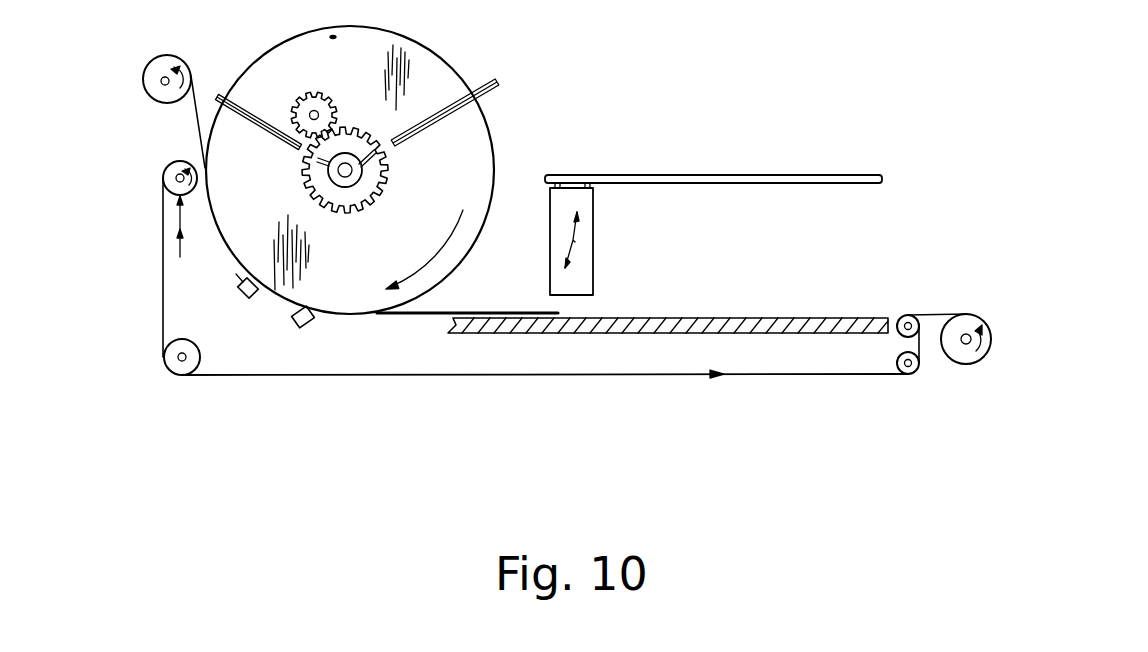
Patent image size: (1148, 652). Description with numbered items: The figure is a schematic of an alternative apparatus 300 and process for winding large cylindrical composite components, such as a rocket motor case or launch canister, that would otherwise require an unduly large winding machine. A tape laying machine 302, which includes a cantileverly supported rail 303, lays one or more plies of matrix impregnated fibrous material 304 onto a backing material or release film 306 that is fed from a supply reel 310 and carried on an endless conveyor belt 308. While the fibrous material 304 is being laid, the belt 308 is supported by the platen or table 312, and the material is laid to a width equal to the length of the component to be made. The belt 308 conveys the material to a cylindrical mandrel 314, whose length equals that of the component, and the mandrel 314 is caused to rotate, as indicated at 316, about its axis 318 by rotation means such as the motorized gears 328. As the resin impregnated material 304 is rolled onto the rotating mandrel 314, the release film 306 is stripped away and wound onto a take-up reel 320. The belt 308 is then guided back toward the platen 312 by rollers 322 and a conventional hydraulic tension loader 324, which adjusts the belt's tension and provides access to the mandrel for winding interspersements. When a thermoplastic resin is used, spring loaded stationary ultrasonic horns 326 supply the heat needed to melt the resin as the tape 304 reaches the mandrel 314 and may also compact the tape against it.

The apparatus 300 is at (477, 398).
The tape laying machine 302 is at (550, 205).
The cantileverly supported rail 303 is at (684, 178).
The matrix impregnated fibrous material 304 is at (476, 313).
The release film 306 is at (195, 125).
The endless conveyor belt 308 is at (658, 376).
The supply reel 310 is at (970, 364).
The platen 312 is at (606, 326).
The cylindrical mandrel 314 is at (378, 27).
The rotation 316 is at (446, 258).
The axis 318 is at (350, 172).
The take-up reel 320 is at (161, 62).
The rollers 322 is at (182, 370).
The hydraulic tension loader 324 is at (170, 183).
The ultrasonic horns 326 is at (240, 292).
The motorized gears 328 is at (313, 93).